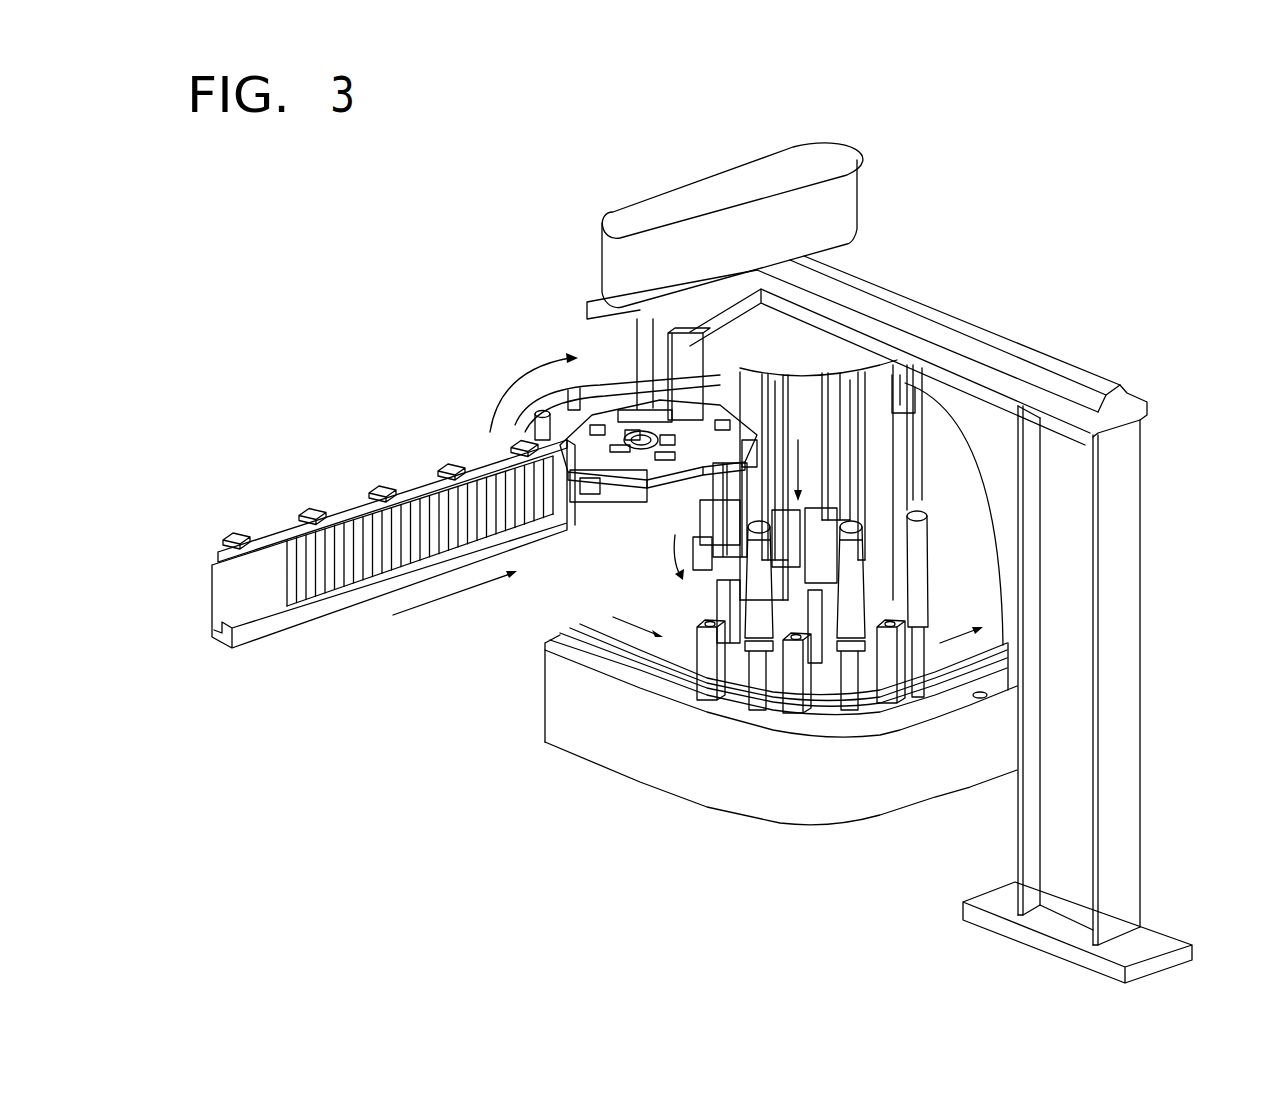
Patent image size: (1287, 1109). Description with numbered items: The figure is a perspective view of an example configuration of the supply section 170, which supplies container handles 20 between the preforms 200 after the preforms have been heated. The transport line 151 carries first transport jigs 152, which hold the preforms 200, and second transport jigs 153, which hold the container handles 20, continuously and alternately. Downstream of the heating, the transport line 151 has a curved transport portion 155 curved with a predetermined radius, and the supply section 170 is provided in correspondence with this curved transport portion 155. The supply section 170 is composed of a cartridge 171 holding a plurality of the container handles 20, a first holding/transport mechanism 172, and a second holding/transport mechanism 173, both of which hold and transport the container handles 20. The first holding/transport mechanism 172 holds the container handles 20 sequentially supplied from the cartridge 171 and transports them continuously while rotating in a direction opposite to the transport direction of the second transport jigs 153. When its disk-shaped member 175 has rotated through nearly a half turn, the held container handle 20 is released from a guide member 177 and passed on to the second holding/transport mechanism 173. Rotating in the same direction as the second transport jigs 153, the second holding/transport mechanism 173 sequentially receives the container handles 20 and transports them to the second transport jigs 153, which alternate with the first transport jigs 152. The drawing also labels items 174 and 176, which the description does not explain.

The supply section 170 is at (440, 258).
The cartridge 171 is at (288, 528).
The first holding/transport mechanism 172 is at (525, 385).
The second holding/transport mechanism 173 is at (920, 448).
The robot 174 is at (645, 356).
The disk-shaped member 175 is at (602, 408).
The transfer unit 176 is at (710, 481).
The guide member 177 is at (520, 420).
The container handle 20 is at (586, 389).
The second transport jig 153 is at (717, 635).
The first transport jig 152 is at (753, 662).
The preform 200 is at (723, 630).
The curved transport portion 155 is at (709, 844).
The transport line 151 is at (705, 698).